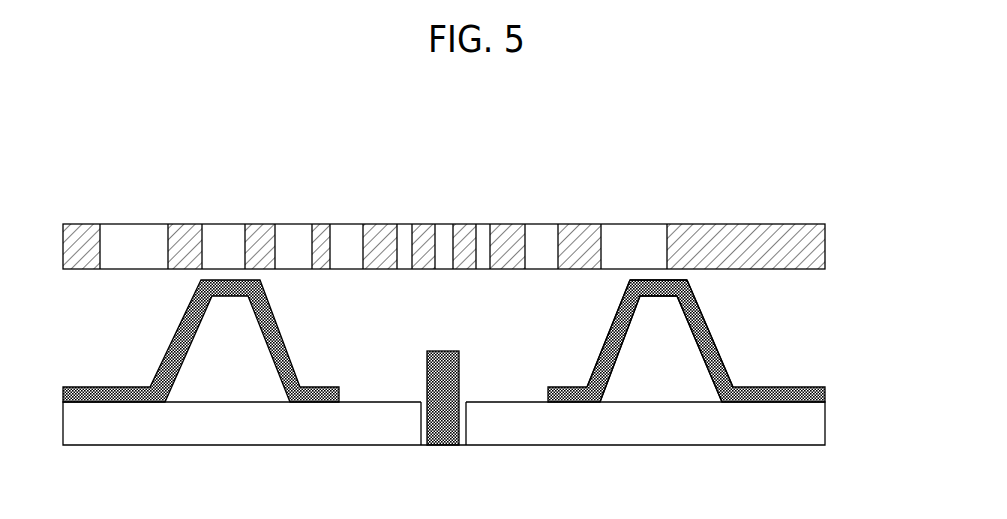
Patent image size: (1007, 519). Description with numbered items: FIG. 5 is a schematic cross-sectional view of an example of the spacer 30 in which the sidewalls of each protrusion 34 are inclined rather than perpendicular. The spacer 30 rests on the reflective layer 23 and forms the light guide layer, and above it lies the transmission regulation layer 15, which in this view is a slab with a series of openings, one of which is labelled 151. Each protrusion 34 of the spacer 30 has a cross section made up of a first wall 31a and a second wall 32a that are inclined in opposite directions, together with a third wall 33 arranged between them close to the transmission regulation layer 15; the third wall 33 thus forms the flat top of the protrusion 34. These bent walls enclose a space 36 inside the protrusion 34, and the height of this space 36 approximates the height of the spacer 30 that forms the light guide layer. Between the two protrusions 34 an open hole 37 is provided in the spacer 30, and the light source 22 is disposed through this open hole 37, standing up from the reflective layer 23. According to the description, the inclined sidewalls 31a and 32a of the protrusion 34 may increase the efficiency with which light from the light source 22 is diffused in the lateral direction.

The transmission regulation layer 15 is at (835, 247).
The mask opening 151 is at (620, 251).
The light source 22 is at (446, 354).
The reflective layer 23 is at (817, 422).
The spacer 30 is at (833, 275).
The first wall 31a is at (700, 328).
The second wall 32a is at (612, 342).
The third wall 33 is at (657, 292).
The protrusion 34 is at (165, 332).
The space 36 is at (674, 383).
The open hole 37 is at (374, 383).